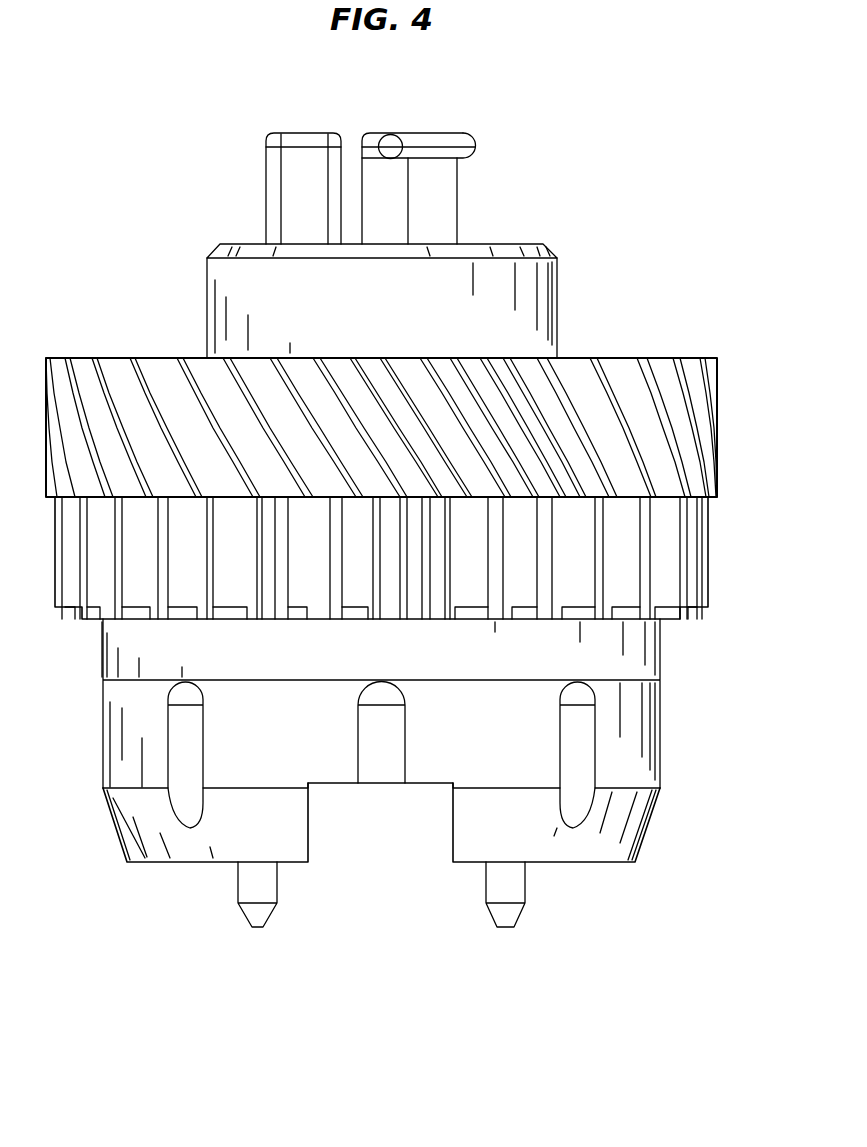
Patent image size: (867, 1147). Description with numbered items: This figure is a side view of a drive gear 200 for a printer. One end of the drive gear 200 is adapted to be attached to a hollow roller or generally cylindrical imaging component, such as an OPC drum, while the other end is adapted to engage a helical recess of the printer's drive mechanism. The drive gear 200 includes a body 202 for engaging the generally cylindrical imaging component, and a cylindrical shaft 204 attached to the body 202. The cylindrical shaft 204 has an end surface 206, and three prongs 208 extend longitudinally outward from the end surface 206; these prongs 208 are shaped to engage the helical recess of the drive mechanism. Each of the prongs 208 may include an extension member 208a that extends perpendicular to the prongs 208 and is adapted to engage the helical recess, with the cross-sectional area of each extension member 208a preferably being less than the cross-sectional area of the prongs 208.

The drive gear 200 is at (690, 266).
The body 202 is at (663, 745).
The cylindrical shaft 204 is at (396, 328).
The end surface 206 is at (522, 244).
The prongs 208 is at (271, 188).
The extension member 208a is at (390, 140).